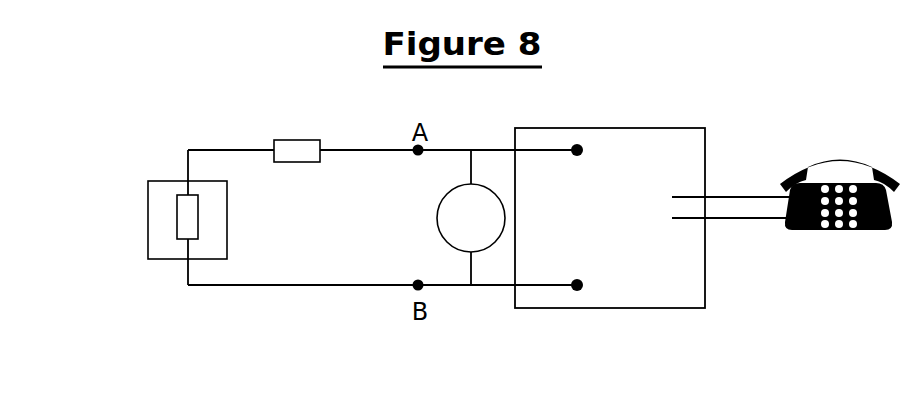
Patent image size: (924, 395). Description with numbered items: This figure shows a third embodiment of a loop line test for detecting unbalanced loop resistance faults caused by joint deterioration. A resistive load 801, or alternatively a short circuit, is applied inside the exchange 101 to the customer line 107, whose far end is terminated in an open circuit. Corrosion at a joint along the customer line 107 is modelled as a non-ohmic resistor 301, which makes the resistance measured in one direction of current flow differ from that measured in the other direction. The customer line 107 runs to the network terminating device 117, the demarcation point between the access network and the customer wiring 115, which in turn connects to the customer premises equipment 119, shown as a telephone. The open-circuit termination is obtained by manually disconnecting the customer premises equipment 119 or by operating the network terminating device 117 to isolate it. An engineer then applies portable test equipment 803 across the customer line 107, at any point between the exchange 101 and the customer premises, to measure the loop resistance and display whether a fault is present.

The exchange 101 is at (148, 218).
The resistive load 801 is at (177, 215).
The non-ohmic resistor 301 is at (298, 140).
The portable test equipment 803 is at (437, 218).
The customer line 107 is at (356, 285).
The network terminating device 117 is at (608, 308).
The customer wiring 115 is at (750, 218).
The customer premises equipment 119 is at (845, 152).